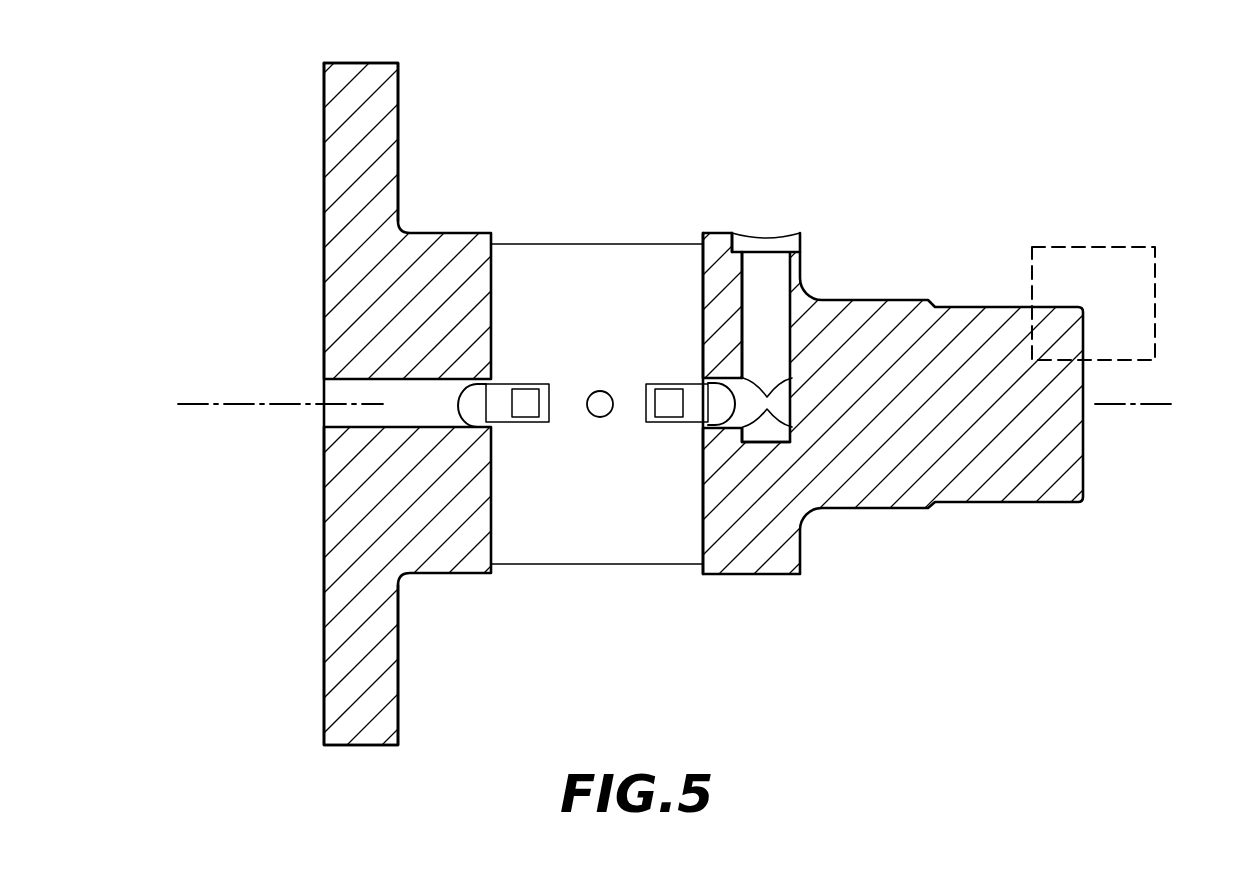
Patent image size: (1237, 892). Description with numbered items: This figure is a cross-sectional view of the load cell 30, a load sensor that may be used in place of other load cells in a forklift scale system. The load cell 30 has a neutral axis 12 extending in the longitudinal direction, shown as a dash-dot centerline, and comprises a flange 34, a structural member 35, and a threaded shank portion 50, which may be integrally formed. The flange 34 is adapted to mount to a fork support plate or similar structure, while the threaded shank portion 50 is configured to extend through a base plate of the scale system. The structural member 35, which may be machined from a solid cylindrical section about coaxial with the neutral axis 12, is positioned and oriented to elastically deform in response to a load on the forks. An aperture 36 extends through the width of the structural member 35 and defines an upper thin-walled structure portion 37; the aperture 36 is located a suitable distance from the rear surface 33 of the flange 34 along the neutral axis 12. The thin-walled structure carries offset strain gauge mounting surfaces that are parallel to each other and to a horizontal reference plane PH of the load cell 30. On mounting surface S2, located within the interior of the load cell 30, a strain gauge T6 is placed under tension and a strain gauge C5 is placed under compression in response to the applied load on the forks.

The neutral axis 12 is at (243, 405).
The load cell 30 is at (957, 196).
The rear surface 33 is at (324, 222).
The flange 34 is at (353, 140).
The structural member 35 is at (727, 235).
The aperture 36 is at (542, 572).
The upper thin-walled structure portion 37 is at (646, 263).
The threaded shank portion 50 is at (1072, 460).
The strain gauge C5 is at (528, 397).
The strain gauge T6 is at (665, 408).
The strain gauge mounting surface S2 is at (602, 304).
The horizontal reference plane PH is at (1155, 302).